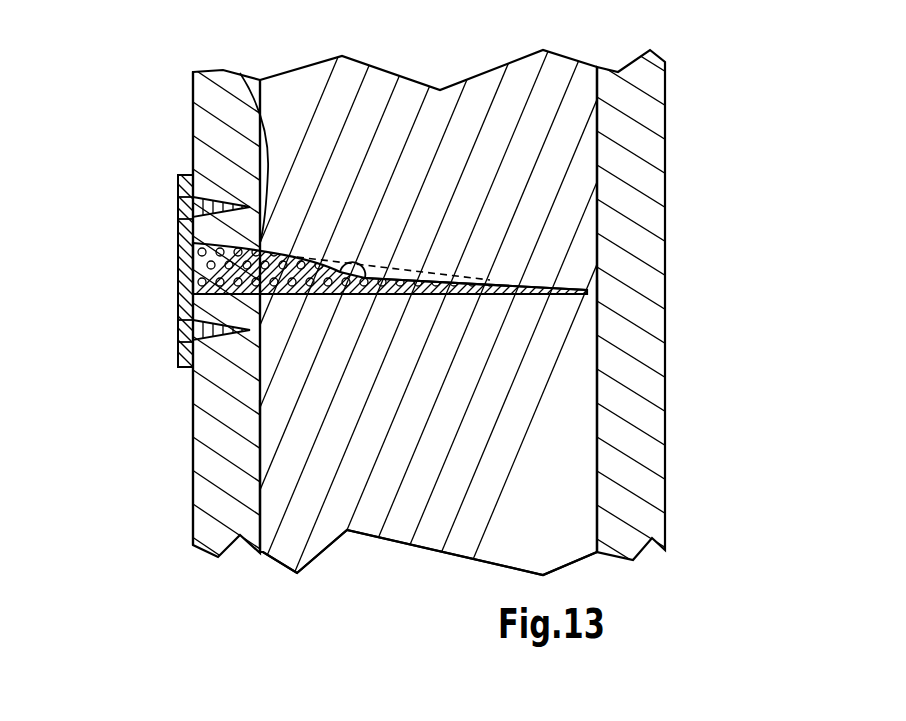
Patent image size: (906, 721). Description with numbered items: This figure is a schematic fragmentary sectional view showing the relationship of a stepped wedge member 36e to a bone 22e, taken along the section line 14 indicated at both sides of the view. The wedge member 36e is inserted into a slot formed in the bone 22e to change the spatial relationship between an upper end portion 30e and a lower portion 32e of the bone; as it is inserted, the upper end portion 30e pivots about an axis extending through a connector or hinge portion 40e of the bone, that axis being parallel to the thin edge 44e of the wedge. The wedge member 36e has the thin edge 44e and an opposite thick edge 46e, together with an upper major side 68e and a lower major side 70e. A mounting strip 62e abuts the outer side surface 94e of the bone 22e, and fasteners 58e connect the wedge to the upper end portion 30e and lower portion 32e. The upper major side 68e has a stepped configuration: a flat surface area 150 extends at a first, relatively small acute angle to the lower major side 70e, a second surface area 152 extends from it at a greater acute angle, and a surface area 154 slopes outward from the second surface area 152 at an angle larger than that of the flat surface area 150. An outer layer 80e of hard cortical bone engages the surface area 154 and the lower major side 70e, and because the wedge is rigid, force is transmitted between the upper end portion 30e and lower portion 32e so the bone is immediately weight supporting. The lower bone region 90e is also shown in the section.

The section line 14- 14 is at (429, 174).
The bone 22e is at (672, 84).
The upper end portion 30e is at (307, 110).
The lower portion 32e is at (287, 467).
The wedge member 36e is at (378, 240).
The connector or hinge portion 40e is at (600, 297).
The thin edge 44e is at (587, 290).
The thick edge 46e is at (180, 280).
The fasteners 58e is at (178, 228).
The mounting strip 62e is at (180, 253).
The upper major side 68e is at (474, 276).
The lower major side 70e is at (430, 297).
The outer layer of hard cortical bone 80e is at (225, 518).
The bottom of body 90e is at (387, 502).
The outer side surface 94e is at (195, 523).
The flat surface area 150 is at (375, 297).
The second surface area 152 is at (352, 270).
The surface area 154 is at (240, 73).